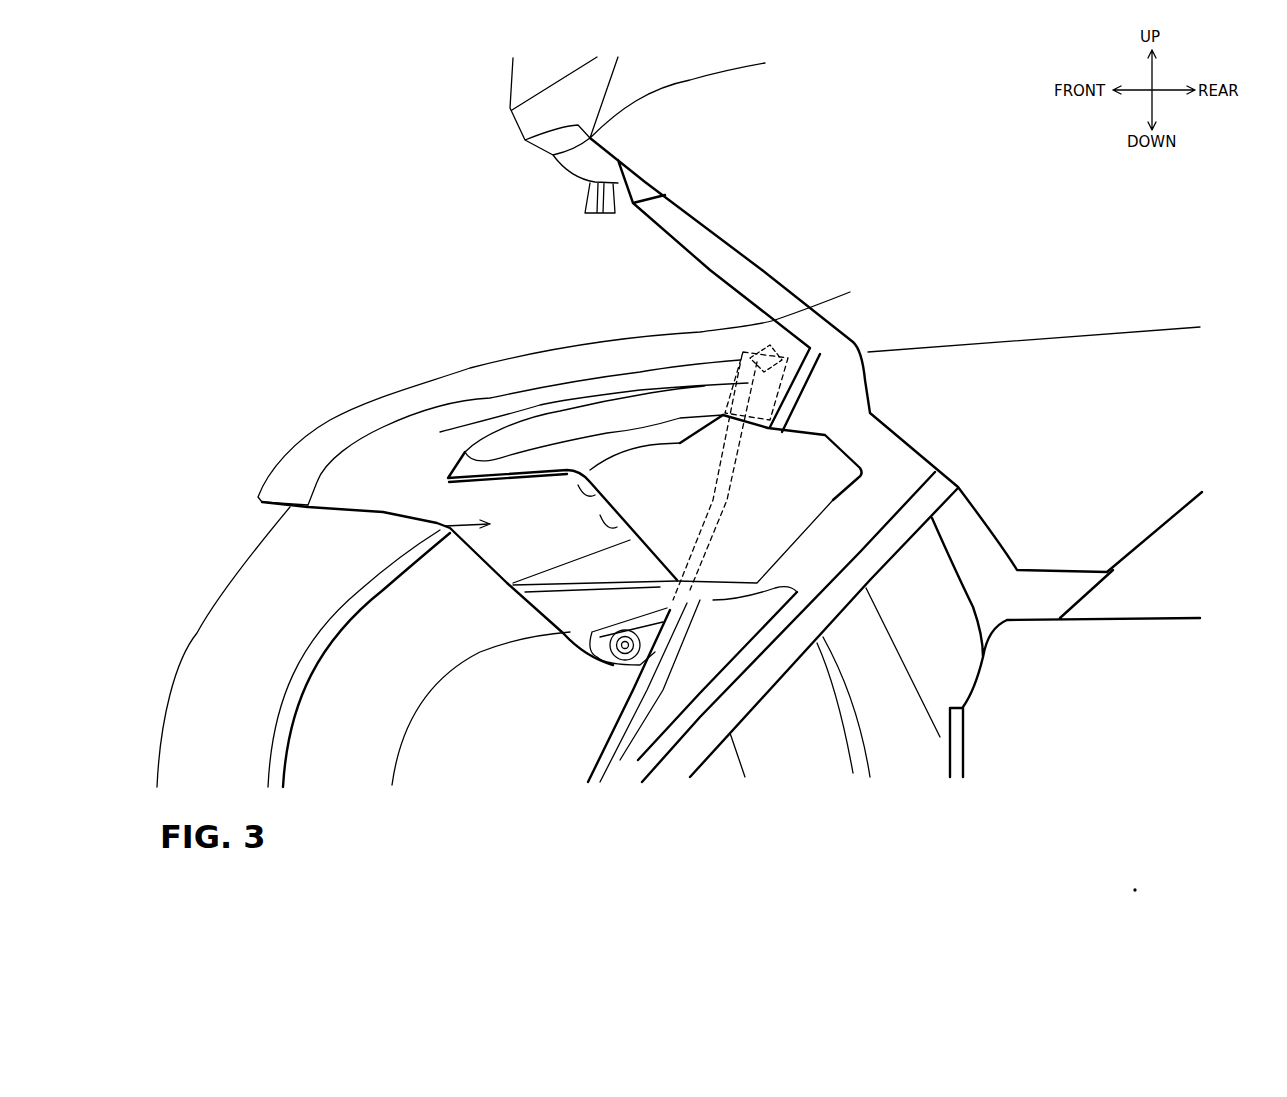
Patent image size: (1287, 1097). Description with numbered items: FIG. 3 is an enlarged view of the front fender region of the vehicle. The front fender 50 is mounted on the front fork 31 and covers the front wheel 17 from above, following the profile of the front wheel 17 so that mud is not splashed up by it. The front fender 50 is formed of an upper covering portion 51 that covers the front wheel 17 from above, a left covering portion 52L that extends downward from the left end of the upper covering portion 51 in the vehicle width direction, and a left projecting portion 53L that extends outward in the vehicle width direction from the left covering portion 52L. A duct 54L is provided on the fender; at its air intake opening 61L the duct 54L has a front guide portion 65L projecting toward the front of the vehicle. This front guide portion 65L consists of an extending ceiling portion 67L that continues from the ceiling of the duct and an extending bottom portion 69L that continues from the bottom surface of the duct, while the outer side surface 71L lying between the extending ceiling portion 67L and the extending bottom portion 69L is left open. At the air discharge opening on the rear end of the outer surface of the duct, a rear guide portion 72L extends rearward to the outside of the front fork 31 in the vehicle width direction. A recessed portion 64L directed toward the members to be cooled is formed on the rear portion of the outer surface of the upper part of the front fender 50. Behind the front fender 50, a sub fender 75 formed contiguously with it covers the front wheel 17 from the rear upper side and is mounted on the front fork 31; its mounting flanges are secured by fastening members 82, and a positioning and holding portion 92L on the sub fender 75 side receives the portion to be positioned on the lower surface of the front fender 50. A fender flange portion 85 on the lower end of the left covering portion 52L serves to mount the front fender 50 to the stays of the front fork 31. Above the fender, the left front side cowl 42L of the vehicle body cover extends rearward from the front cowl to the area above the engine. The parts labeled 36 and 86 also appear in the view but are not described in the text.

The front wheel 17 is at (263, 587).
The front fork 31 is at (753, 685).
The seat cowl 36 is at (525, 85).
The left front side cowl 42L is at (752, 202).
The front fender 50 is at (357, 404).
The upper covering portion 51 is at (455, 387).
The left covering portion 52L is at (493, 543).
The left projecting portion 53L is at (670, 512).
The duct 54L is at (618, 537).
The air intake opening 61L is at (563, 468).
The recessed portion 64L is at (662, 402).
The front guide portion 65L is at (430, 528).
The extending ceiling portion 67L is at (530, 477).
The extending bottom portion 69L is at (593, 567).
The outer side surface 71L is at (527, 533).
The rear guide portion 72L is at (840, 450).
The sub fender 75 is at (950, 653).
The fastening member 82 is at (790, 355).
The fender flange portion 85 is at (645, 636).
The bolt 86 is at (627, 648).
The positioning and holding portion 92L is at (747, 352).